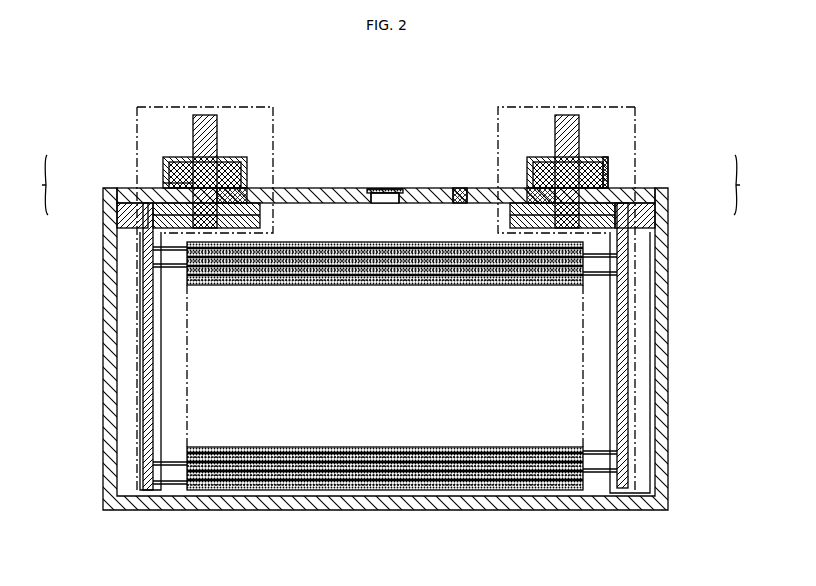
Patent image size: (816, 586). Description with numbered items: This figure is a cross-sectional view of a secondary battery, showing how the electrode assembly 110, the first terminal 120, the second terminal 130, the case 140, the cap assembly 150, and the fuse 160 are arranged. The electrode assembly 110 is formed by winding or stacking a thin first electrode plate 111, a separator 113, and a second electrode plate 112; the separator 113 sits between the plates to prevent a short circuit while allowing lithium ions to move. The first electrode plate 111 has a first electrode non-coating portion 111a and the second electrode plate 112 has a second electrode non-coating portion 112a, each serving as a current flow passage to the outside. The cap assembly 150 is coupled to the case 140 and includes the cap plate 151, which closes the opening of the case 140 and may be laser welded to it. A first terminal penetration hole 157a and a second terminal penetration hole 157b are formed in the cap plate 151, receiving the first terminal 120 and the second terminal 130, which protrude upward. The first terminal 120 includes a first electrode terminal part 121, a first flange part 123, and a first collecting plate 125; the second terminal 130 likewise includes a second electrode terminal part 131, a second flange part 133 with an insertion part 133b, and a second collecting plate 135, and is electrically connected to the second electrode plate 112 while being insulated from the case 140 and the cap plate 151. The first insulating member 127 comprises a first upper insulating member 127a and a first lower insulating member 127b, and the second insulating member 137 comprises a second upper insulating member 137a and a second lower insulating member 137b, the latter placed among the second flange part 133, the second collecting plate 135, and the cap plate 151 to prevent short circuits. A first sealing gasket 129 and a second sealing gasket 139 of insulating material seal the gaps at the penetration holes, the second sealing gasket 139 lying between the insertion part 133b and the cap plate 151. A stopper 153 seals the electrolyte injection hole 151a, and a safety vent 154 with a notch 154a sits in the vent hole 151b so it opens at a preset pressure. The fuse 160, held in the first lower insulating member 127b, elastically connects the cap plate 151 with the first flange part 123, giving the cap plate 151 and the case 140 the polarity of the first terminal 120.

The electrode assembly 110 is at (385, 399).
The first electrode plate 111 is at (282, 492).
The first electrode non-coating portion 111a is at (168, 492).
The second electrode plate 112 is at (520, 492).
The second electrode non-coating portion 112a is at (598, 477).
The separator 113 is at (400, 472).
The first terminal 120 is at (170, 280).
The first electrode terminal part 121 is at (225, 155).
The first flange part 123 is at (262, 212).
The first collecting plate 125 is at (141, 345).
The first insulating member 127 is at (31, 185).
The first upper insulating member 127a is at (163, 162).
The first lower insulating member 127b is at (125, 215).
The first sealing gasket 129 is at (240, 190).
The second terminal 130 is at (622, 100).
The second electrode terminal part 131 is at (549, 155).
The second flange part 133 is at (612, 202).
The insertion part 133b is at (606, 162).
The second collecting plate 135 is at (626, 377).
The second insulating member 137 is at (753, 185).
The second upper insulating member 137a is at (612, 185).
The second lower insulating member 137b is at (655, 215).
The second sealing gasket 139 is at (540, 190).
The case 140 is at (668, 275).
The cap assembly 150 is at (412, 120).
The cap plate 151 is at (328, 188).
The electrolyte injection hole 151a is at (460, 203).
The vent hole 151b is at (386, 203).
The stopper 153 is at (460, 188).
The safety vent 154 is at (400, 189).
The notch 154a is at (382, 189).
The first terminal penetration hole 157a is at (185, 162).
The second terminal penetration hole 157b is at (600, 162).
The fuse 160 is at (163, 183).